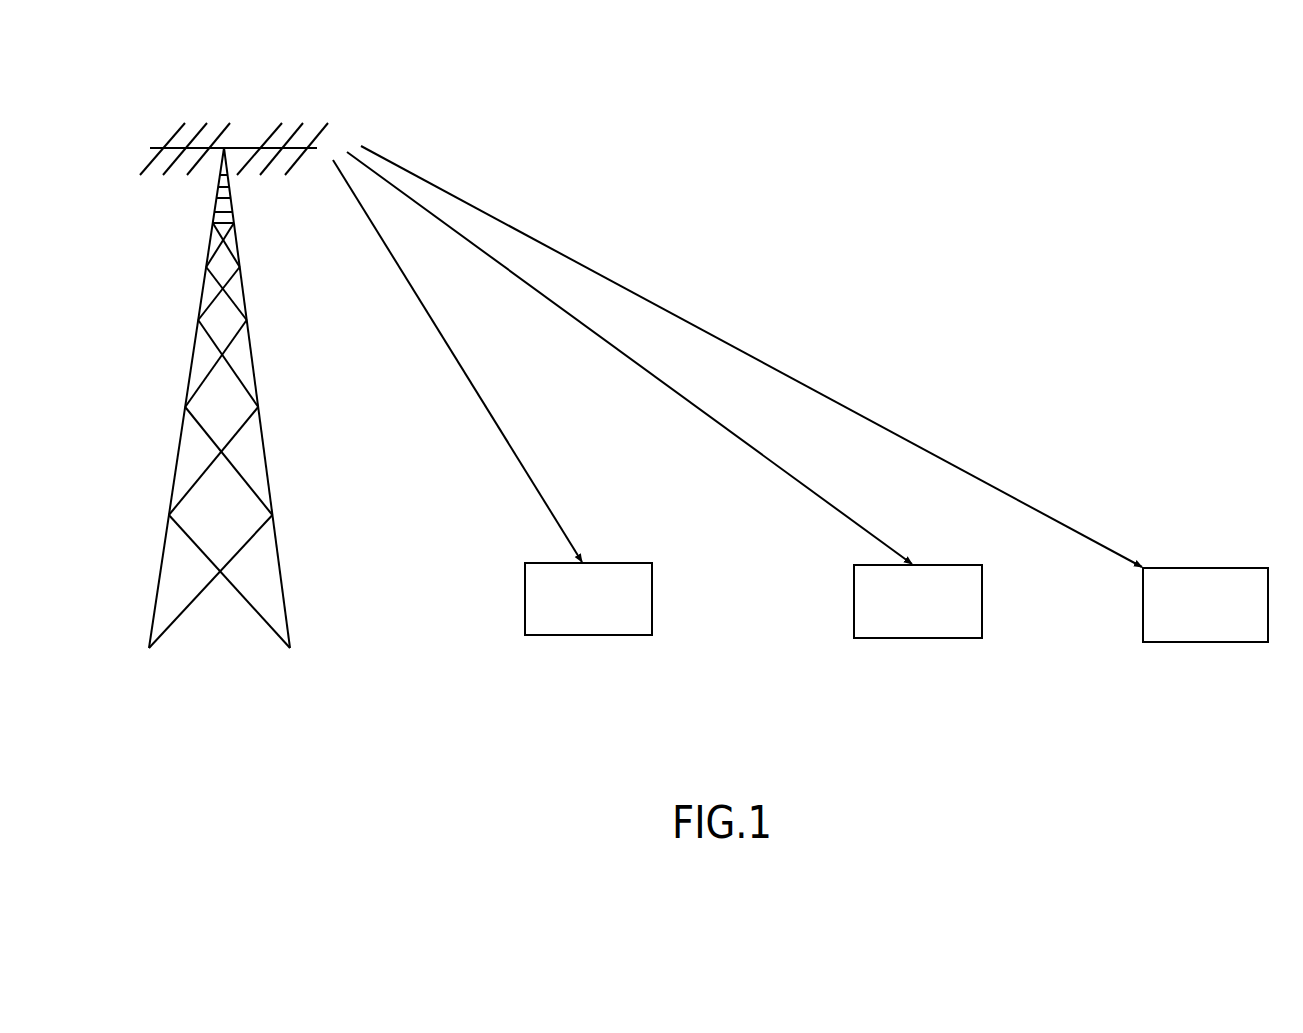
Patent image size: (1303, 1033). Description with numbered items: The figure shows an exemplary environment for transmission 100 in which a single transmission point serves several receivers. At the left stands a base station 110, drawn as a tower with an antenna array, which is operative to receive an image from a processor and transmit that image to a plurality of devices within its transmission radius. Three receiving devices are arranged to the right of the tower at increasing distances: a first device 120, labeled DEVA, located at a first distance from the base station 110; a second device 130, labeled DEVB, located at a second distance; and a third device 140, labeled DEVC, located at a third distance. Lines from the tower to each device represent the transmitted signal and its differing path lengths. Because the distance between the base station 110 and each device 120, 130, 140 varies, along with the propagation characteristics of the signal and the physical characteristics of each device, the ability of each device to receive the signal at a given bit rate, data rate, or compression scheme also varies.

The environment for transmission 100 is at (972, 178).
The base station 110 is at (203, 111).
The first device 120 is at (551, 638).
The second device 130 is at (879, 641).
The third device 140 is at (1168, 645).